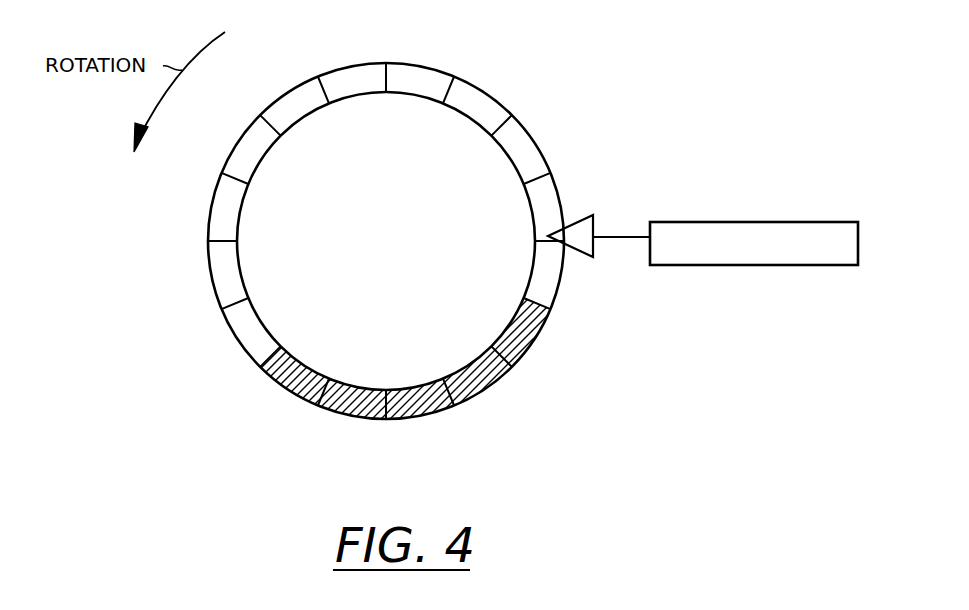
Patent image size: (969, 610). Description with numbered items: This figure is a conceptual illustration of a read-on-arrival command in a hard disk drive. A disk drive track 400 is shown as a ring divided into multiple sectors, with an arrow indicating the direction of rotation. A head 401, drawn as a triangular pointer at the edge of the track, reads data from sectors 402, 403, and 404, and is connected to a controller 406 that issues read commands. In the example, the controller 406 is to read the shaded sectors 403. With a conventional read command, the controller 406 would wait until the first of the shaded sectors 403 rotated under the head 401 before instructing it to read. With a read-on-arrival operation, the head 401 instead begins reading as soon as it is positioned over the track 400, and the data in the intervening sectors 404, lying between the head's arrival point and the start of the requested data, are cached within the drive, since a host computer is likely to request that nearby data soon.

The disk drive track 400 is at (632, 464).
The head 401 is at (595, 230).
The sectors 402 is at (218, 200).
The sectors 403 is at (284, 380).
The sectors 404 is at (560, 207).
The controller 406 is at (798, 222).